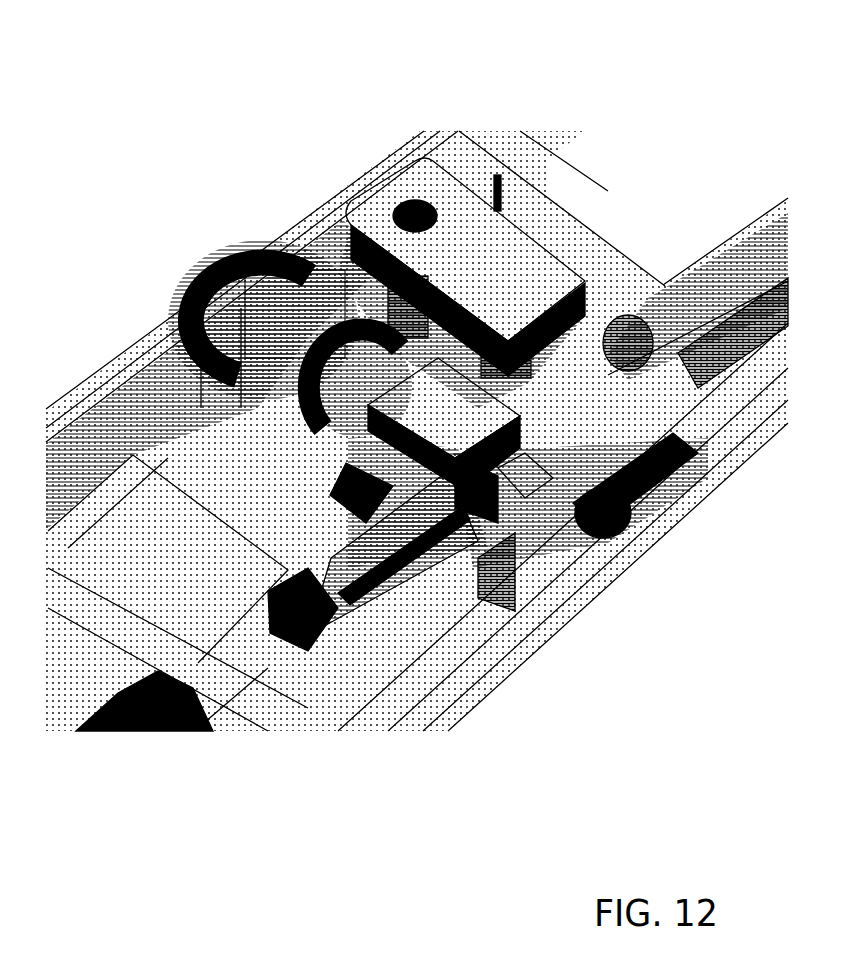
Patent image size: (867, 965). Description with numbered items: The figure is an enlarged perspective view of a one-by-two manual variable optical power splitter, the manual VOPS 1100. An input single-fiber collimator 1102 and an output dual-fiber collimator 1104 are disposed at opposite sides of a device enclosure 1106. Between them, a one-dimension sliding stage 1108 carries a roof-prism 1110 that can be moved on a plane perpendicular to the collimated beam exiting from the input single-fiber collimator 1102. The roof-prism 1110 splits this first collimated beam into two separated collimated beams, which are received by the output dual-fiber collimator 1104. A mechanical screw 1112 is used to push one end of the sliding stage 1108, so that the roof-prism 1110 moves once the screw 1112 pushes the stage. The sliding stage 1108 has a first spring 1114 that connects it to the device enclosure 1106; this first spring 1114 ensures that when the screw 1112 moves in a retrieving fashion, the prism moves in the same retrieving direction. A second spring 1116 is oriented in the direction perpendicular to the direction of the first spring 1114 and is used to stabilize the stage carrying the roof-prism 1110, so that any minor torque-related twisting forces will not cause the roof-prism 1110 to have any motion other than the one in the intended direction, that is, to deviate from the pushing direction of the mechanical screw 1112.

The 1×2 manual VOPS 1100 is at (417, 390).
The input single-fiber collimator 1102 is at (335, 542).
The output dual-fiber collimator 1104 is at (770, 197).
The device enclosure 1106 is at (145, 320).
The one-dimension sliding stage 1108 is at (355, 458).
The roof-prism 1110 is at (490, 470).
The mechanical screw 1112 is at (228, 237).
The first spring 1114 is at (618, 535).
The second spring 1116 is at (578, 328).